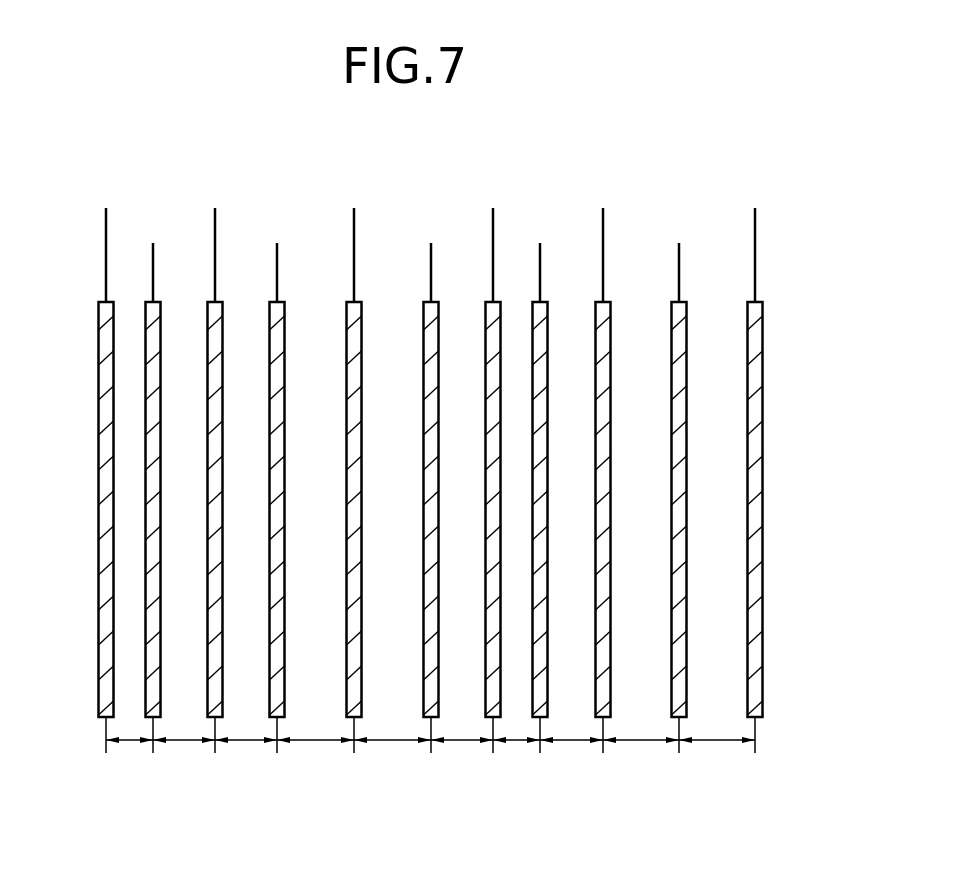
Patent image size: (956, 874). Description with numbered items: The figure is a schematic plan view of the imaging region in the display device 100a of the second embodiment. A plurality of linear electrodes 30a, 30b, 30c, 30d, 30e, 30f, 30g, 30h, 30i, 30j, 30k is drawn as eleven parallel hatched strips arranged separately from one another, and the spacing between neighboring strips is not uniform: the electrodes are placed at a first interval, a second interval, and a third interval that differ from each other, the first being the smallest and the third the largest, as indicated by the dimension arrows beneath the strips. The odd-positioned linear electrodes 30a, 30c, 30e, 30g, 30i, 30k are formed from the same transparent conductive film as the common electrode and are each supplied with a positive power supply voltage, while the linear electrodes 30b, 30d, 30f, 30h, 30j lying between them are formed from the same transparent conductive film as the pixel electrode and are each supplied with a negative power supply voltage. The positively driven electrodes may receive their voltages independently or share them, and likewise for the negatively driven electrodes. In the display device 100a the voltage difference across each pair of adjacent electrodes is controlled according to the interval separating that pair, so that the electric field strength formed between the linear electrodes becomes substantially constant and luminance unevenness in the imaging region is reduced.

The display device 100a is at (696, 106).
The linear electrode 30a is at (98, 301).
The linear electrode 30b is at (182, 286).
The linear electrode 30c is at (222, 301).
The linear electrode 30d is at (284, 301).
The linear electrode 30e is at (362, 301).
The linear electrode 30f is at (438, 301).
The linear electrode 30g is at (522, 286).
The linear electrode 30h is at (568, 286).
The linear electrode 30i is at (610, 301).
The linear electrode 30j is at (686, 301).
The linear electrode 30k is at (762, 301).